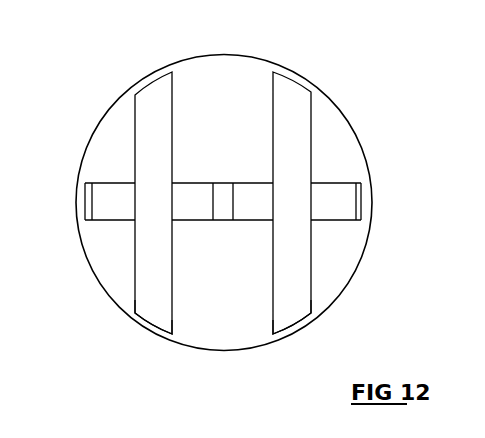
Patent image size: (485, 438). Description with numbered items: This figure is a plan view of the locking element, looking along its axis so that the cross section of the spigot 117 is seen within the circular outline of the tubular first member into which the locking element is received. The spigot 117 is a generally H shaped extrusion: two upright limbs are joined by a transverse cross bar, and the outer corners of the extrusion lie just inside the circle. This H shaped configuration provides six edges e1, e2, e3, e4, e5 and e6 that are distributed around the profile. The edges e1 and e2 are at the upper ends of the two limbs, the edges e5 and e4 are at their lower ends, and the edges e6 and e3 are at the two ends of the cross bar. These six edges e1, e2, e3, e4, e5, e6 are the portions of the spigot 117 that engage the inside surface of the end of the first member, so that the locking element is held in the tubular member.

The spigot 117 is at (179, 270).
The edge e1 is at (155, 80).
The edge e2 is at (297, 82).
The edge e3 is at (361, 212).
The edge e4 is at (305, 318).
The edge e5 is at (139, 319).
The edge e6 is at (85, 208).